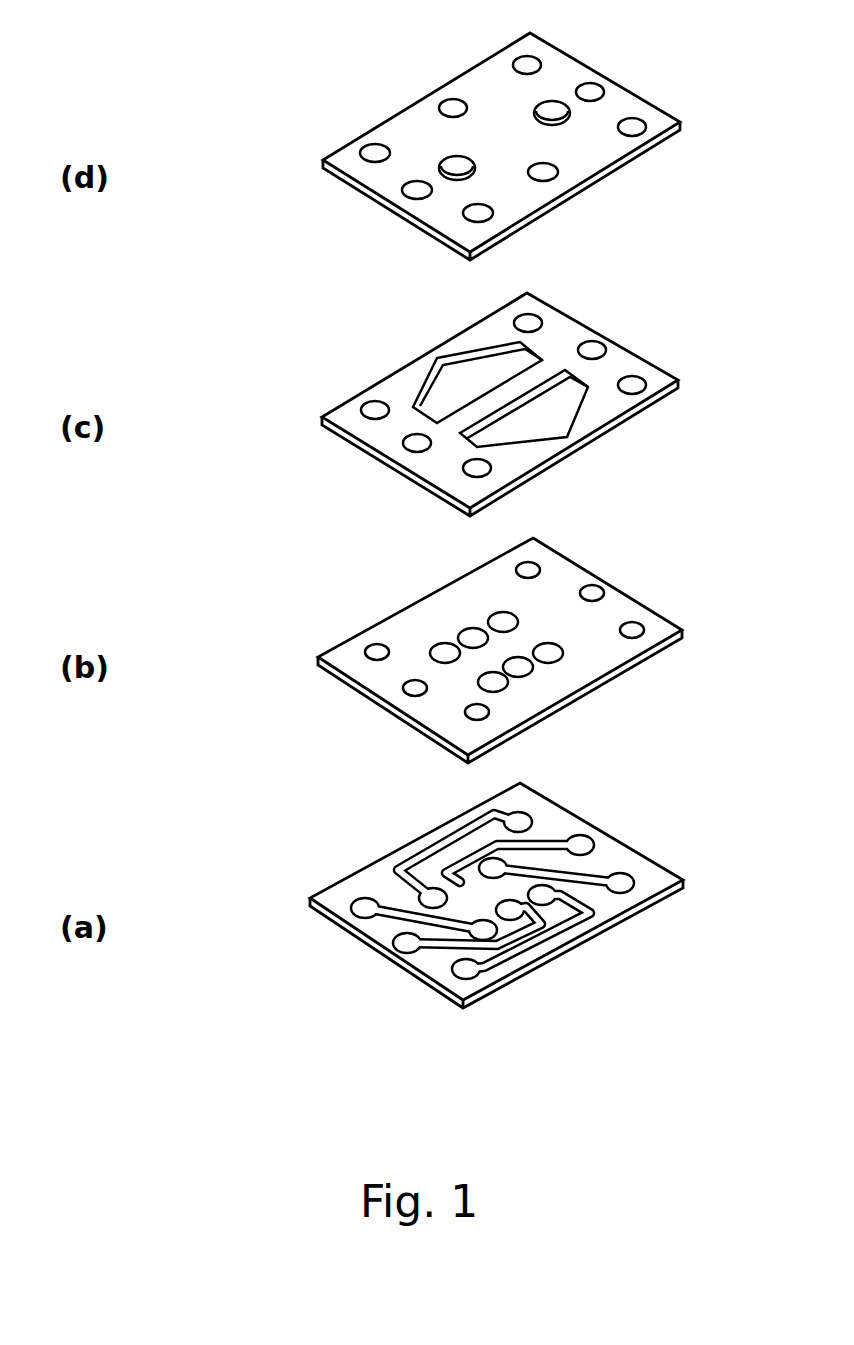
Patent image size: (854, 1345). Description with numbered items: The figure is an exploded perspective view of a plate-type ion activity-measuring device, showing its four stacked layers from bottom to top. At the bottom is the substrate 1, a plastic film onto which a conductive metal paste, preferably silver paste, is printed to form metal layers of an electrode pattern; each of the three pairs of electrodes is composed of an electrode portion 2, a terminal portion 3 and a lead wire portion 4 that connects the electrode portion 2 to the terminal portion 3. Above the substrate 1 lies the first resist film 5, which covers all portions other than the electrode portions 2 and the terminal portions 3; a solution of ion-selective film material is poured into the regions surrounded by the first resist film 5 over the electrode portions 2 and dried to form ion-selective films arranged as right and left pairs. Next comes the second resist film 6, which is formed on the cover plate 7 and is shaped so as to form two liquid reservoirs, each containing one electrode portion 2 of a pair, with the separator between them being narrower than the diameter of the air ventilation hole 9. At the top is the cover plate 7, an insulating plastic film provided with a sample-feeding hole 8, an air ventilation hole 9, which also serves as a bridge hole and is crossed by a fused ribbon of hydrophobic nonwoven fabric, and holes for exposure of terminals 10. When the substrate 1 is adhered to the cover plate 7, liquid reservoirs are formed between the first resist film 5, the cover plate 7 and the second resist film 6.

The substrate 1 is at (387, 963).
The electrode portion 2 is at (547, 895).
The terminal portion 3 is at (465, 972).
The lead wire portion 4 is at (543, 943).
The first resist film 5 is at (372, 707).
The second resist film 6 is at (353, 447).
The cover plate 7 is at (380, 200).
The sample-feeding hole 8 is at (453, 106).
The air ventilation hole 9 is at (553, 115).
The holes for exposure of terminals 10 is at (632, 125).